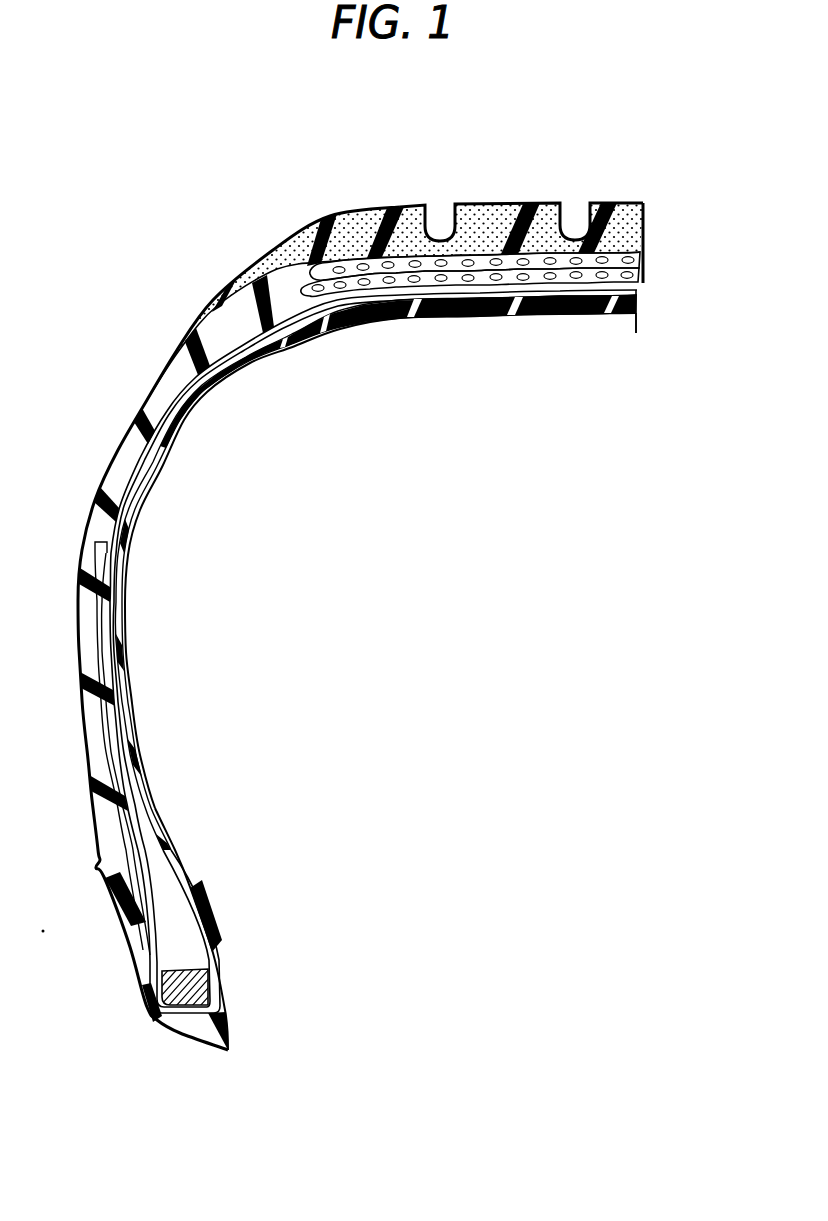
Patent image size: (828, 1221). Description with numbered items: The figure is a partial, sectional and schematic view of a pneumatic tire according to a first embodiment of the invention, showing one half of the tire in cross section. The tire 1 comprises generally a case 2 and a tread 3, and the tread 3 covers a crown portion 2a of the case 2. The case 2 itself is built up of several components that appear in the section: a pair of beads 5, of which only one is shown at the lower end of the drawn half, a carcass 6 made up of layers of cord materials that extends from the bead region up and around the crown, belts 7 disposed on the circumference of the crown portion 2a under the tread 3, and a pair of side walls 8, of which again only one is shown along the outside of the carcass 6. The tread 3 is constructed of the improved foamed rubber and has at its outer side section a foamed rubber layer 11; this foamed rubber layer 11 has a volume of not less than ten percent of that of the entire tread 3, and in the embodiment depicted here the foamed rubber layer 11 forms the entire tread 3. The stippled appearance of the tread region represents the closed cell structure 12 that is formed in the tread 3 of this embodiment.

The tire 1 is at (587, 162).
The case 2 is at (668, 260).
The crown portion 2a is at (630, 338).
The tread 3 is at (668, 207).
The bead 5 is at (198, 977).
The carcass 6 is at (143, 462).
The belts 7 is at (305, 305).
The side wall 8 is at (81, 589).
The foamed rubber layer 11 is at (347, 228).
The closed cell structure 12 is at (288, 260).